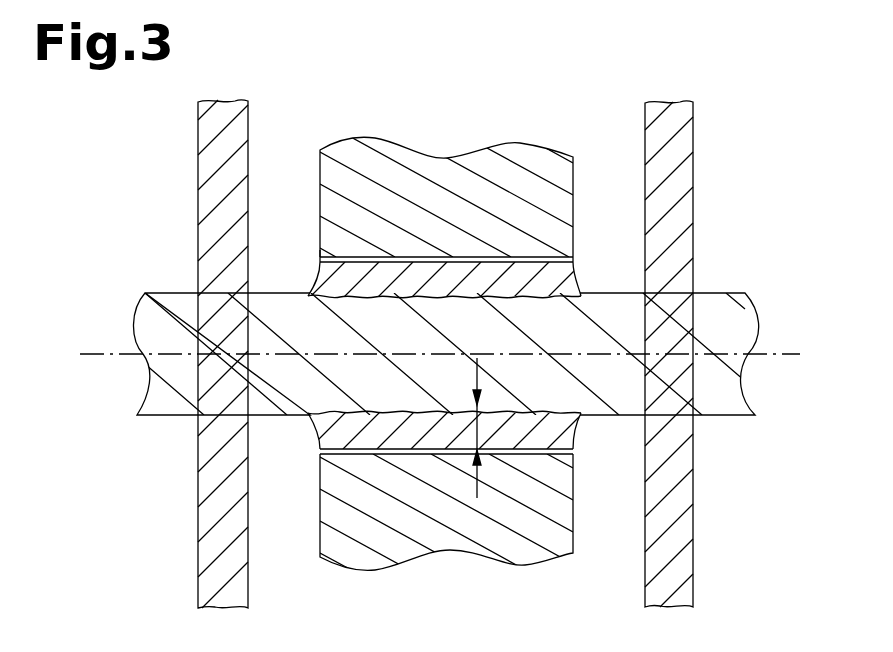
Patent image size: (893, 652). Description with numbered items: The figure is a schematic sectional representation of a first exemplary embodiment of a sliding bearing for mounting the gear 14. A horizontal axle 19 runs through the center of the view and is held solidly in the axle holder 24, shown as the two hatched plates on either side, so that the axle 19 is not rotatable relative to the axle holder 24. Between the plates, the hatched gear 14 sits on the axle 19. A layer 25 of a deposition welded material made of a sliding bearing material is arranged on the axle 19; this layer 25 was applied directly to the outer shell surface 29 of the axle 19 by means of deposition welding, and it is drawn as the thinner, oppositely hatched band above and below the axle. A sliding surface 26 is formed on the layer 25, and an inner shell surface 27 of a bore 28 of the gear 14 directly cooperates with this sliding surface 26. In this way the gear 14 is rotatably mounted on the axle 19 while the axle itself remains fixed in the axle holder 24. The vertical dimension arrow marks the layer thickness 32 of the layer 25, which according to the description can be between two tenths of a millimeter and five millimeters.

The gear 14 is at (507, 157).
The axle 19 is at (732, 323).
The axle holder 24 is at (170, 438).
The layer 25 is at (537, 273).
The sliding surface 26 is at (515, 257).
The inner shell surface 27 is at (445, 262).
The bore 28 is at (303, 252).
The outer shell surface 29 is at (543, 297).
The layer thickness 32 is at (478, 475).